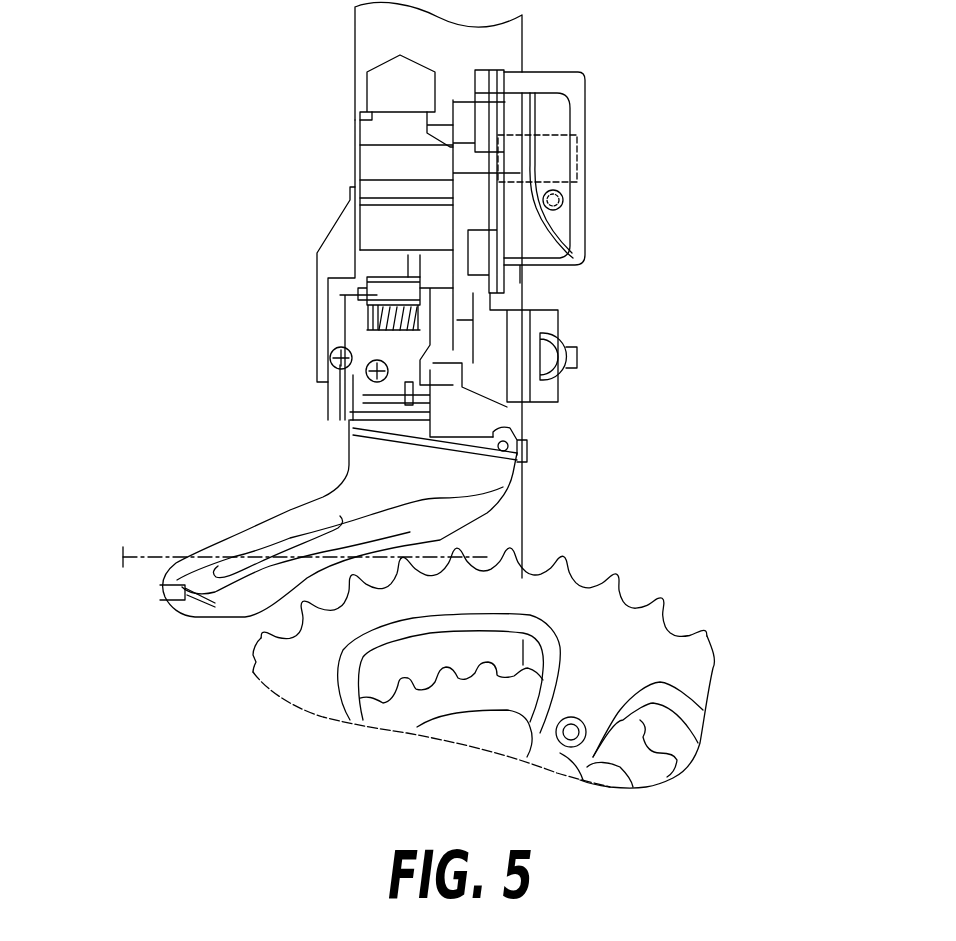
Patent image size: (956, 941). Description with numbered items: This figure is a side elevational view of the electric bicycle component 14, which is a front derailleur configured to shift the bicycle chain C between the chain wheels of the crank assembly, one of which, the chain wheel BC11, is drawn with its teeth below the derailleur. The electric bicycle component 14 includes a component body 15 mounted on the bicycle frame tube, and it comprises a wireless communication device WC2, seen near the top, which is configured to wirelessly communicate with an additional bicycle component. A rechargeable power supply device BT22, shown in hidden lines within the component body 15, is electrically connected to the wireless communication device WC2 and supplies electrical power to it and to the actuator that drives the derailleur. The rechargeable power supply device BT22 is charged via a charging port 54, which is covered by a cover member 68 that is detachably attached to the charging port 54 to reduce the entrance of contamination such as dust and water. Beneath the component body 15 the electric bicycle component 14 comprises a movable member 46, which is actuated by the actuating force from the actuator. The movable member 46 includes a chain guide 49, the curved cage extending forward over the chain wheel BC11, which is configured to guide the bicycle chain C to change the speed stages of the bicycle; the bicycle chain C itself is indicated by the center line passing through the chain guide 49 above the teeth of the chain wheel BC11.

The wireless communication device WC2 is at (385, 96).
The electric bicycle component 14 is at (305, 208).
The component body 15 is at (590, 226).
The rechargeable power supply device BT22 is at (579, 150).
The cover member 68 is at (576, 196).
The charging port 54 is at (578, 201).
The movable member 46 is at (311, 494).
The chain guide 49 is at (263, 528).
The bicycle chain C is at (143, 556).
The chain wheel BC11 is at (701, 609).